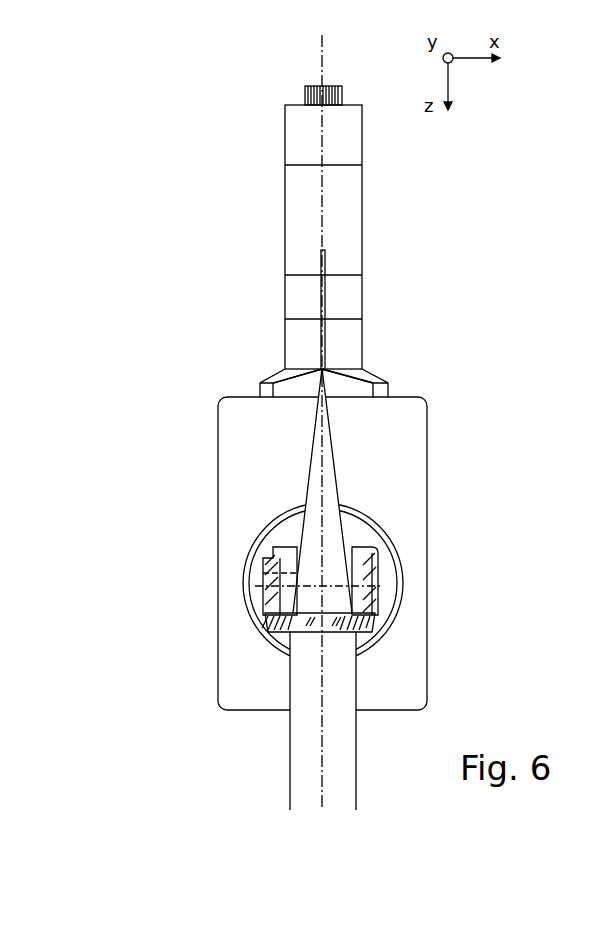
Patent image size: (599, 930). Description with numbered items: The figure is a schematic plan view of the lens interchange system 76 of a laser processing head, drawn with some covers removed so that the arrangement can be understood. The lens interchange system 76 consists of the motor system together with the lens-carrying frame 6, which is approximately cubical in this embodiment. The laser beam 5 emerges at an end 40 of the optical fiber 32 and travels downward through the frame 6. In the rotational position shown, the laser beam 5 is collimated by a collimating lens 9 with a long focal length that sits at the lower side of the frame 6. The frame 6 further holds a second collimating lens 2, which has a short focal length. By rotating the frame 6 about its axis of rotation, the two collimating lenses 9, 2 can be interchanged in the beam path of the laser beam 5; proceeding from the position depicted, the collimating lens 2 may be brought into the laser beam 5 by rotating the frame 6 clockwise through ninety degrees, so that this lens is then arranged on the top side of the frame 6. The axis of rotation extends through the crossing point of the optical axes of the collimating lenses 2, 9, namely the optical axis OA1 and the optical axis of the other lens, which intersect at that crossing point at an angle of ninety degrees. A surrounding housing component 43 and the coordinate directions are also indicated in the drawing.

The housing / drive unit 43 is at (292, 345).
The optical fiber 32 is at (327, 300).
The end of the optical fiber 40 is at (326, 374).
The lens interchange system 76 is at (516, 494).
The frame 6 is at (367, 557).
The laser beam 5 is at (338, 481).
The collimating lens 2 is at (283, 597).
The collimating lens 9 is at (337, 628).
The optical axis OA1 is at (263, 573).